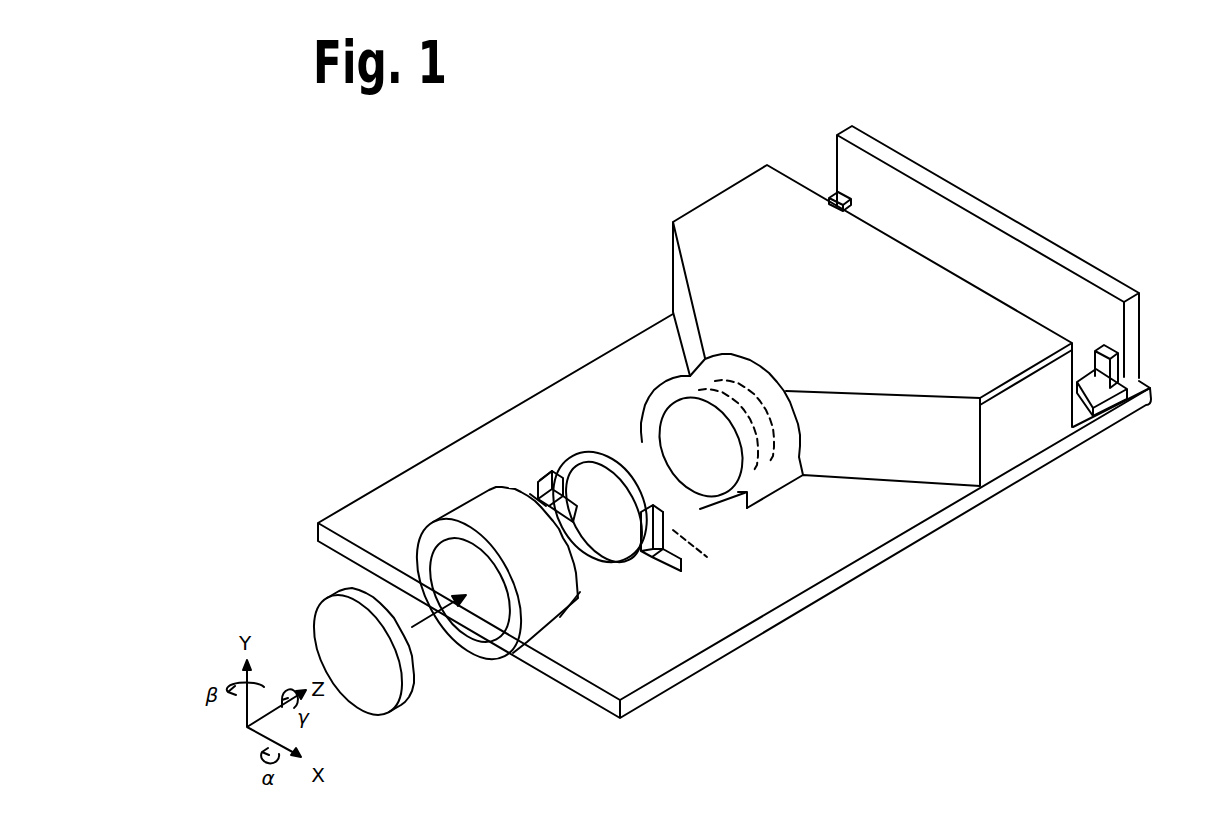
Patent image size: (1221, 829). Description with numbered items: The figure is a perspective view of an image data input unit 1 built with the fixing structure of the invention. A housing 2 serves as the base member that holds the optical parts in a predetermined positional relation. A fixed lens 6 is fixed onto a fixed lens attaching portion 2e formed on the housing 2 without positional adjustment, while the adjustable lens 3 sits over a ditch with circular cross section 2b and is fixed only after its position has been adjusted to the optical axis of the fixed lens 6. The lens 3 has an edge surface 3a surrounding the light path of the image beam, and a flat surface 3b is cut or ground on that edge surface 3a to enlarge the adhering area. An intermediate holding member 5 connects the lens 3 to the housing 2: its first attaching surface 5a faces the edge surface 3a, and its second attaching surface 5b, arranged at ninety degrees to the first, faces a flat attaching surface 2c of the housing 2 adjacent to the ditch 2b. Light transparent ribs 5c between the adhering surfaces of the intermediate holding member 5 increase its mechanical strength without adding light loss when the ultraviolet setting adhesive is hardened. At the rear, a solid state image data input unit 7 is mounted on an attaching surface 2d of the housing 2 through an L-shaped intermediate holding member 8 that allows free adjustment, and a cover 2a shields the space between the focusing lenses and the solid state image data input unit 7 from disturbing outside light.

The image data input unit 1 is at (710, 184).
The housing 2 is at (908, 548).
The cover 2a is at (1013, 400).
The ditch with circular cross section 2b is at (708, 516).
The attaching surface 2c is at (645, 578).
The attaching surface 2d is at (1092, 427).
The fixed lens attaching portion 2e is at (490, 614).
The lens 3 is at (572, 460).
The edge surface 3a is at (623, 463).
The flat surface 3b is at (543, 486).
The intermediate holding member 5 is at (540, 478).
The first attaching surface 5a is at (560, 480).
The second attaching surface 5b is at (657, 565).
The light transparent ribs 5c is at (692, 548).
The fixed lens 6 is at (398, 688).
The solid state image data input unit 7 is at (1095, 272).
The intermediate holding member 8 is at (832, 196).